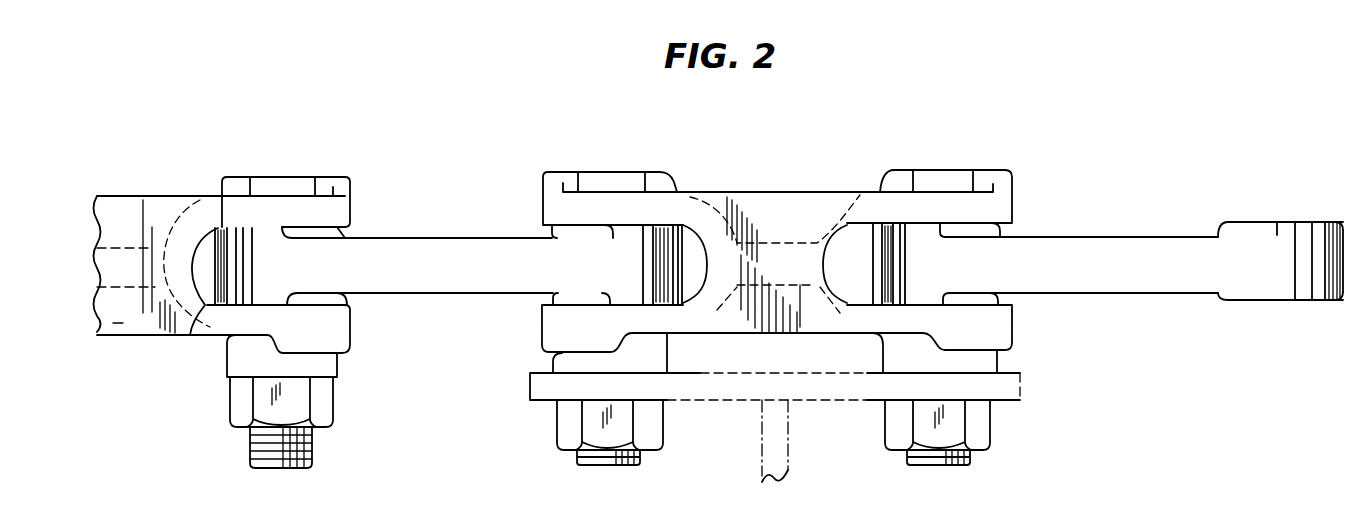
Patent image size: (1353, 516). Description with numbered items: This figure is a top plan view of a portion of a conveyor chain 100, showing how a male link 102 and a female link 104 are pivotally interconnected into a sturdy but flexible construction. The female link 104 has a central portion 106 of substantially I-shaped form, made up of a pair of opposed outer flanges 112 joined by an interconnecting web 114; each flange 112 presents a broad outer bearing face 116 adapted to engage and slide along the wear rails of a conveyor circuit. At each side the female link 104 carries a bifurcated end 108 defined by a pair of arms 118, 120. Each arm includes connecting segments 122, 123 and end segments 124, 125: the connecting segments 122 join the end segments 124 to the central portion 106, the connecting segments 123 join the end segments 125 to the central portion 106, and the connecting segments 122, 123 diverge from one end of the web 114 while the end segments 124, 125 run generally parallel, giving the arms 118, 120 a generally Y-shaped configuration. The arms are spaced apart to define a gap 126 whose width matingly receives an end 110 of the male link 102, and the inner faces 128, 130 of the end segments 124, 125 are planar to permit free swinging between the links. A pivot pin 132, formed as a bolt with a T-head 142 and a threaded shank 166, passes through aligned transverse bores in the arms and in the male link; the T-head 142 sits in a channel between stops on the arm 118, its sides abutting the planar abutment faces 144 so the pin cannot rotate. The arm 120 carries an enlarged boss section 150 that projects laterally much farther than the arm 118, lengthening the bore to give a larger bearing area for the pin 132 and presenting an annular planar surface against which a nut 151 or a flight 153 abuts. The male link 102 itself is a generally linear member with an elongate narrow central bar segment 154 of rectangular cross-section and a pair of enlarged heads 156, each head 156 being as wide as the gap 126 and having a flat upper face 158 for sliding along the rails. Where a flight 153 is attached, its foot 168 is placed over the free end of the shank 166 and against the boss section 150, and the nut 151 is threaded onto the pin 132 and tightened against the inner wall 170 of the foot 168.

The chain 100 is at (941, 108).
The male link 102 is at (444, 215).
The female link 104 is at (128, 192).
The central portion 106 is at (775, 188).
The bifurcated ends 108 is at (351, 170).
The end of male link 110 is at (232, 252).
The outer flanges 112 is at (113, 330).
The web 114 is at (115, 322).
The bearing face 116 is at (795, 227).
The arm 118 is at (293, 207).
The arm 120 is at (333, 320).
The connecting segments 122 is at (703, 212).
The connecting segments 123 is at (703, 313).
The end segments 124 is at (607, 207).
The end segments 125 is at (607, 313).
The gap 126 is at (173, 313).
The inner face 128 is at (1017, 227).
The inner face 130 is at (1013, 293).
The pivot pin 132 is at (320, 440).
The T-head 142 is at (271, 183).
The abutment faces 144 is at (582, 173).
The boss section 150 is at (333, 362).
The nut 151 is at (237, 395).
The flight 153 is at (792, 448).
The central bar segment 154 is at (437, 272).
The head 156 is at (1284, 278).
The upper face 158 is at (1157, 252).
The threaded shank 166 is at (260, 443).
The foot 168 is at (716, 400).
The inner wall 170 is at (688, 403).